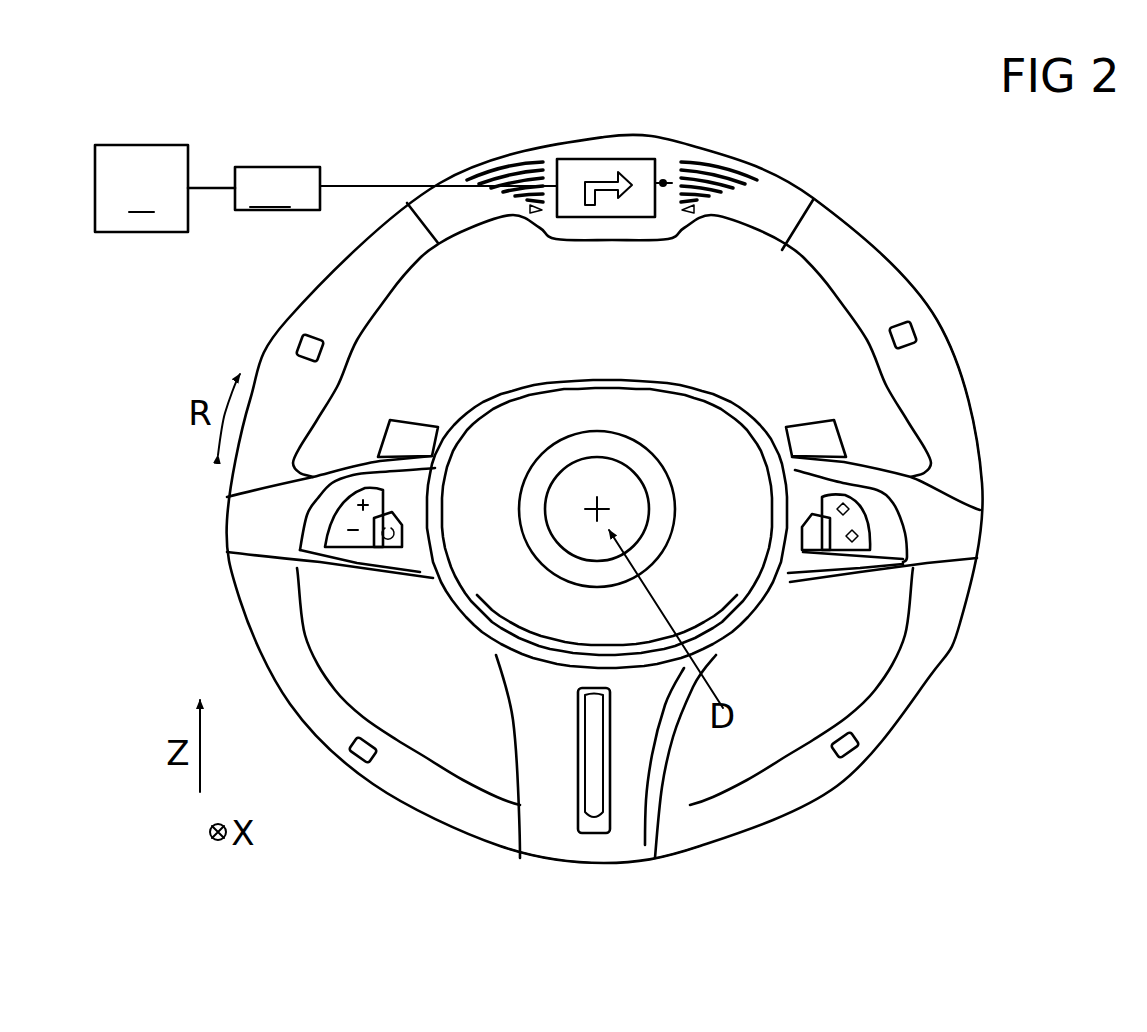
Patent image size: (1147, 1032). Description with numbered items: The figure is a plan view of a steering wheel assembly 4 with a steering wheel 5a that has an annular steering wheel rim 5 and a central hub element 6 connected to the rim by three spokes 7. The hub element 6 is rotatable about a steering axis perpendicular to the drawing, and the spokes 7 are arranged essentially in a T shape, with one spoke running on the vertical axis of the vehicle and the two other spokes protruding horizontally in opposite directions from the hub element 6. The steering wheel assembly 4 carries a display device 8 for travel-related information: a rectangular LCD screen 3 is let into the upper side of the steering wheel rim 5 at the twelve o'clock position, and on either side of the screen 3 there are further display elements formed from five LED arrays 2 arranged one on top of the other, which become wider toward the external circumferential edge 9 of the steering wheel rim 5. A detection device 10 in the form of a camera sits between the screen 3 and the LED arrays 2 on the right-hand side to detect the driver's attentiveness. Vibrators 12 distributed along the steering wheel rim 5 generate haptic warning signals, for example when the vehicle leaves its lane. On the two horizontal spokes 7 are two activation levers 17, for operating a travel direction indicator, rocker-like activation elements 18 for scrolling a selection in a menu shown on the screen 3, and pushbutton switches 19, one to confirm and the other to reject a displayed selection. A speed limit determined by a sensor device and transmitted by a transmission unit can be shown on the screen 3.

The LED arrays 2 is at (513, 203).
The screen 3 is at (618, 172).
The steering wheel assembly 4 is at (278, 270).
The steering wheel rim 5 is at (955, 620).
The steering wheel 5a is at (829, 803).
The hub element 6 is at (480, 578).
The spokes 7 is at (960, 534).
The display device 8 is at (599, 128).
The external circumferential edge 9 is at (852, 224).
The detection device 10 is at (666, 182).
The vibrators 12 is at (302, 338).
The activation levers 17 is at (398, 430).
The rocker-like activation elements 18 is at (372, 531).
The pushbutton switches 19 is at (395, 540).